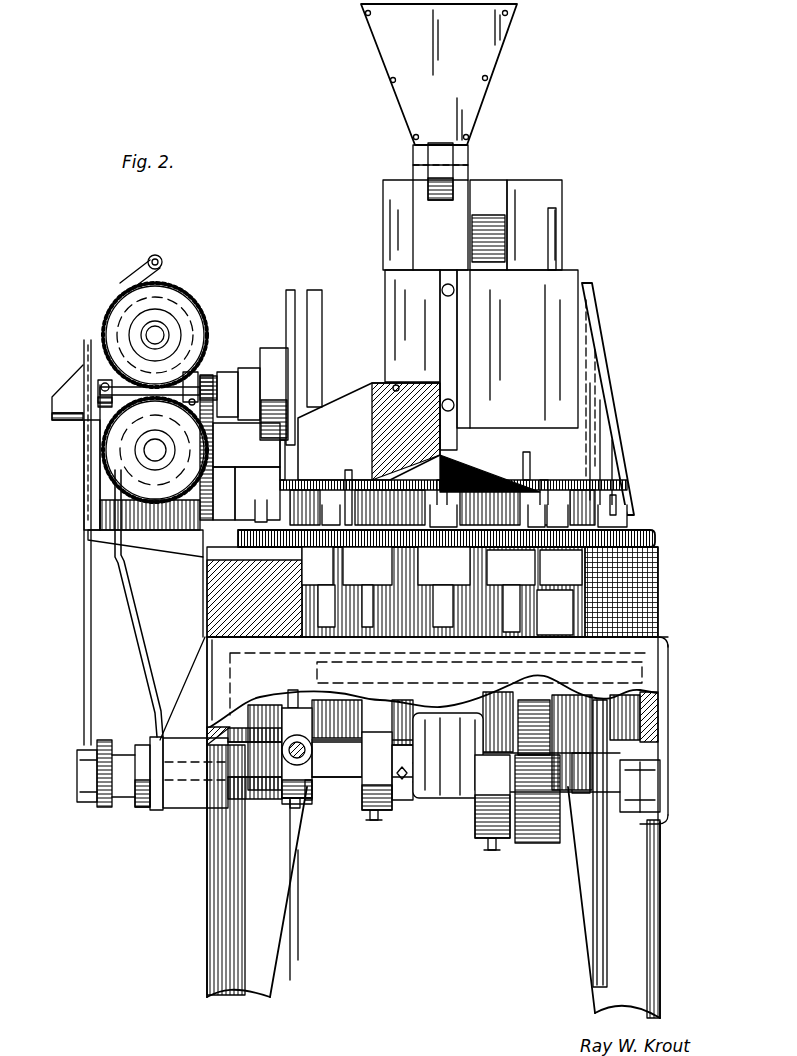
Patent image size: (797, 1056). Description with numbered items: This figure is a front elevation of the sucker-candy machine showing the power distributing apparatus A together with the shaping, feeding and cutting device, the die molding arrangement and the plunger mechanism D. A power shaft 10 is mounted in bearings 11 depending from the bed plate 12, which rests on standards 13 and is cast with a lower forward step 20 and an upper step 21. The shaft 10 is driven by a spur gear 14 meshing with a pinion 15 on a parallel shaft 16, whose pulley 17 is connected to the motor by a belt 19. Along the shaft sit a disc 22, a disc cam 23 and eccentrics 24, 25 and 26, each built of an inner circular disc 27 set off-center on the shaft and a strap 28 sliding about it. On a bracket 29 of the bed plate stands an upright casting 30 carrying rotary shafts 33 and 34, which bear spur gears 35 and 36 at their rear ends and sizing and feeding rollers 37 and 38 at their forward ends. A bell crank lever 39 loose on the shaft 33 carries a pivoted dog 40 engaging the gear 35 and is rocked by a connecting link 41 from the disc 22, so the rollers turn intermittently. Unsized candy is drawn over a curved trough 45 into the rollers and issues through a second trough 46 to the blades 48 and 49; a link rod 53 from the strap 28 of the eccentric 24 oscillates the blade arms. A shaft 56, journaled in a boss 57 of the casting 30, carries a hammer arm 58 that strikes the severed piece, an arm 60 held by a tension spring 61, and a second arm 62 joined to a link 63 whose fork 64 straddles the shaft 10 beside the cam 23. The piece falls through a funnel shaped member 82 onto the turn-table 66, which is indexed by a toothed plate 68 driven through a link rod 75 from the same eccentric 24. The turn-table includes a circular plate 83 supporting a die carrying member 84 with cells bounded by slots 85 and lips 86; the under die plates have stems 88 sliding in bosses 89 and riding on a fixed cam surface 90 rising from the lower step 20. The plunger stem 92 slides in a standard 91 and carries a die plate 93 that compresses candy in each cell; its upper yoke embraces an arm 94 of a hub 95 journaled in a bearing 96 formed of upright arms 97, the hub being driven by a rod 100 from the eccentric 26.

The power shaft 10 is at (333, 780).
The bearings 11 is at (190, 793).
The bed plate 12 is at (215, 670).
The standards 13 is at (280, 893).
The spur gear 14 is at (537, 843).
The pinion 15 is at (553, 790).
The shaft 16 is at (574, 773).
The pulley 17 is at (608, 856).
The belt 19 is at (598, 938).
The lower step 20 is at (630, 636).
The upper step 21 is at (233, 524).
The disc 22 is at (100, 808).
The disc cam 23 is at (143, 808).
The eccentric 24 is at (312, 800).
The eccentric 25 is at (392, 800).
The eccentric 26 is at (478, 823).
The inner circular disc 27 is at (362, 754).
The strap 28 is at (283, 760).
The projecting bracket 29 is at (152, 545).
The upright supporting casting 30 is at (100, 505).
The rotary shaft 33 is at (163, 333).
The rotary shaft 34 is at (143, 456).
The spur gear 35 is at (106, 303).
The spur gear 36 is at (84, 440).
The sizing and feeding roller 37 is at (207, 333).
The sizing and feeding roller 38 is at (214, 439).
The bell crank lever 39 is at (180, 292).
The pivoted dog 40 is at (140, 265).
The connecting link 41 is at (84, 651).
The curved trough 45 is at (62, 392).
The second trough 46 is at (246, 447).
The blade 48 is at (280, 462).
The blade 49 is at (286, 316).
The link rod 53 is at (276, 692).
The shaft 56 is at (155, 396).
The boss 57 is at (232, 372).
The hammer arm 58 is at (322, 342).
The arm 60 is at (191, 372).
The constant tension spring 61 is at (222, 485).
The second arm 62 is at (100, 385).
The link 63 is at (132, 604).
The fork 64 is at (153, 738).
The turn-table 66 is at (526, 480).
The toothed plate 68 is at (317, 675).
The link rod 75 is at (313, 803).
The funnel shaped member 82 is at (419, 437).
The circular plate 83 is at (655, 538).
The die carrying member 84 is at (438, 500).
The vertical radially disposed slot 85 is at (347, 482).
The integral lip 86 is at (264, 500).
The depending stem 88 is at (440, 618).
The integral boss 89 is at (688, 576).
The fixed inclined cam surface 90 is at (555, 612).
The standard 91 is at (517, 349).
The stem 92 is at (481, 443).
The die plate 93 is at (425, 448).
The arm 94 is at (440, 143).
The hub 95 is at (487, 180).
The arcuately movable bearing 96 is at (540, 180).
The upright arms 97 is at (562, 229).
The rod 100 is at (483, 716).
The power distributing apparatus A is at (440, 858).
The plunger mechanism D is at (420, 317).